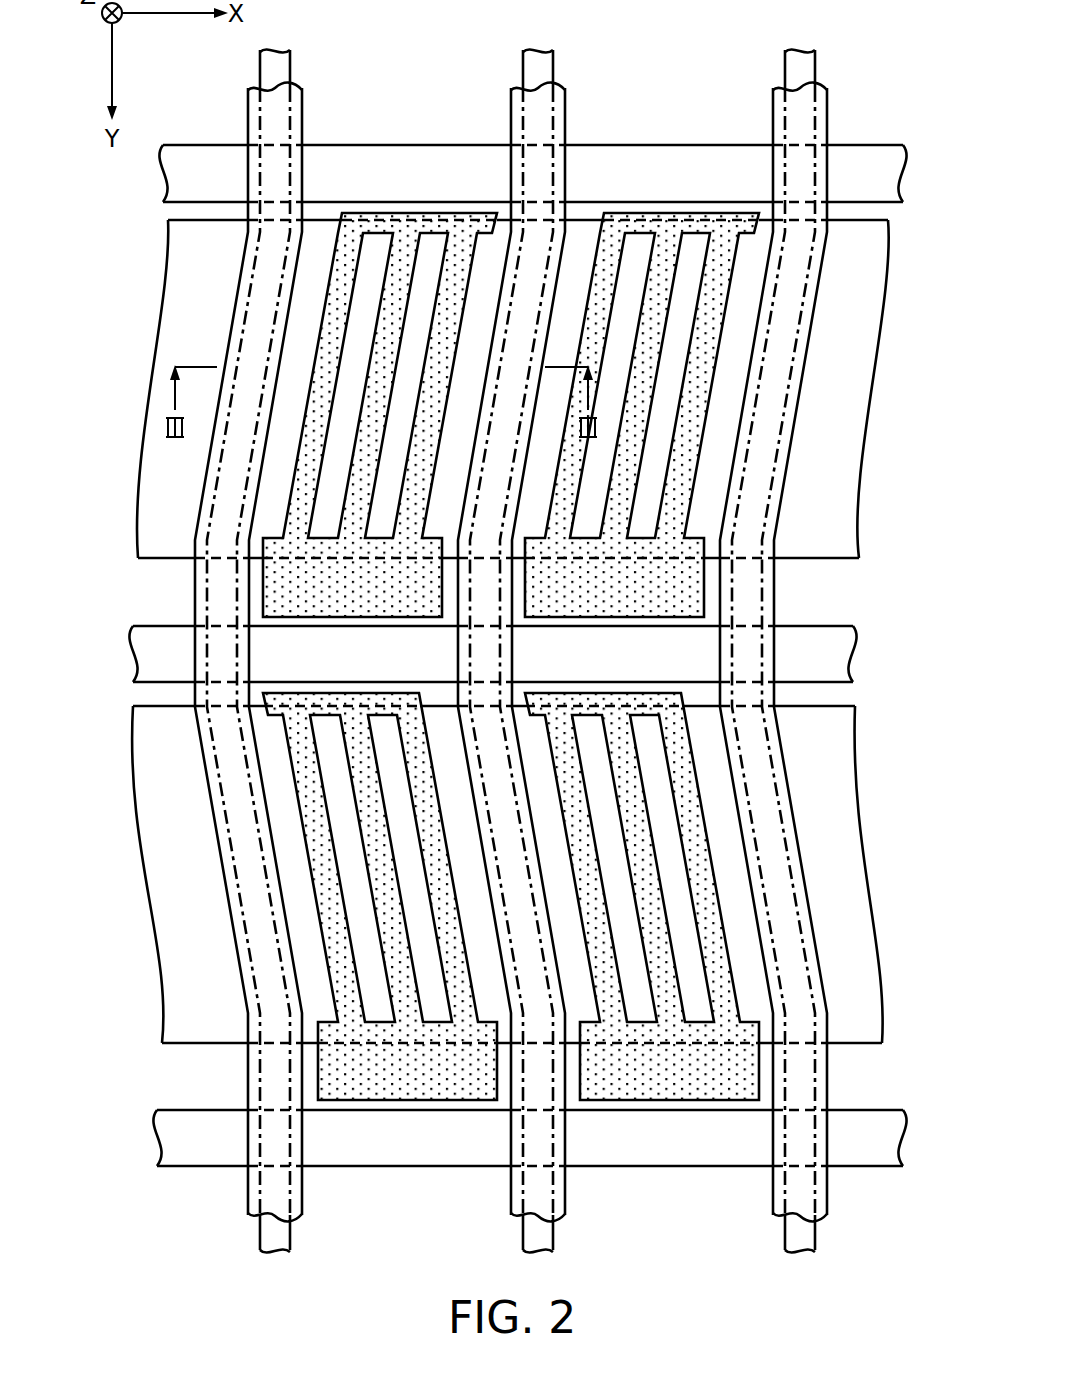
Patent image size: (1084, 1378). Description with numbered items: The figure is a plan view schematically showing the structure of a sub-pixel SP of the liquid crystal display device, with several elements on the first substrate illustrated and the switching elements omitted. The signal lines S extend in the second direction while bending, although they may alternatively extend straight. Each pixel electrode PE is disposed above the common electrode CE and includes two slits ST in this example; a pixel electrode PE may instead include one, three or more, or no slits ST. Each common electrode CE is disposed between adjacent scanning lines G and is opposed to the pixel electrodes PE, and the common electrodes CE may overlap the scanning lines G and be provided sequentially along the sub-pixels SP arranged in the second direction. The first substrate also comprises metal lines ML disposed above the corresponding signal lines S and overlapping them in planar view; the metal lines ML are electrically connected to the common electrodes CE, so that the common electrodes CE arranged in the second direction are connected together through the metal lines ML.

The signal line S is at (516, 626).
The metal line ML is at (546, 643).
The sub-pixel SP is at (451, 134).
The scanning line G is at (524, 633).
The common electrode CE is at (486, 631).
The pixel electrode PE is at (473, 656).
The slit ST is at (267, 489).